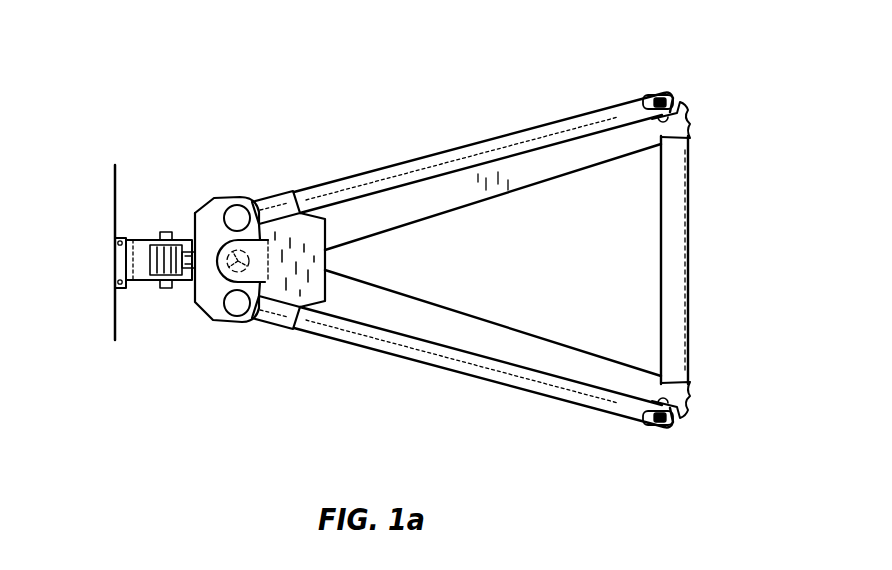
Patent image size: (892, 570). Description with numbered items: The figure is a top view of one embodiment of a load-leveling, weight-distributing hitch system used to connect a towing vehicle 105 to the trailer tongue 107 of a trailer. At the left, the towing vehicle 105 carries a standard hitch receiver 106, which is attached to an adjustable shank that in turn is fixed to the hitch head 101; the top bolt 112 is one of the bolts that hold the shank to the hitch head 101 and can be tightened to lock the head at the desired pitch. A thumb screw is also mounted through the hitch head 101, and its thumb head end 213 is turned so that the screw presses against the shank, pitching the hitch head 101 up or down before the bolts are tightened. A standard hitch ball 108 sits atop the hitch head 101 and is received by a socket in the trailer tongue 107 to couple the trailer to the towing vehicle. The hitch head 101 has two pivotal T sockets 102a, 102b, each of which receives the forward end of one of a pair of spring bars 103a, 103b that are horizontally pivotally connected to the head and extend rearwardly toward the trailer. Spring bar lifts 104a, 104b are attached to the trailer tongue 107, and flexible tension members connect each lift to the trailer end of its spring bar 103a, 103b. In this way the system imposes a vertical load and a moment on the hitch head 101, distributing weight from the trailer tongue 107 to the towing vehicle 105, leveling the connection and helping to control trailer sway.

The hitch head 101 is at (207, 204).
The pivotal T socket 102a is at (256, 200).
The pivotal T socket 102b is at (258, 326).
The spring bar 103a is at (416, 160).
The spring bar 103b is at (416, 360).
The spring bar lift 104a is at (690, 99).
The spring bar lift 104b is at (689, 422).
The towing vehicle 105 is at (78, 278).
The hitch receiver 106 is at (116, 242).
The trailer tongue 107 is at (498, 329).
The hitch ball 108 is at (232, 283).
The top bolt 112 is at (156, 236).
The thumb head end 213 is at (184, 234).